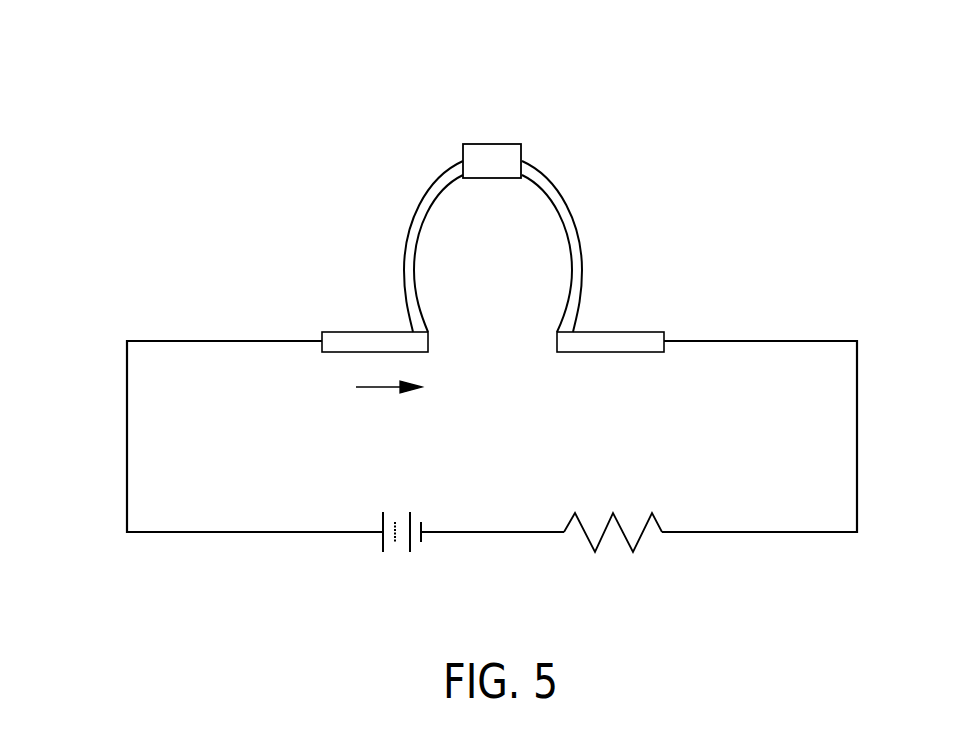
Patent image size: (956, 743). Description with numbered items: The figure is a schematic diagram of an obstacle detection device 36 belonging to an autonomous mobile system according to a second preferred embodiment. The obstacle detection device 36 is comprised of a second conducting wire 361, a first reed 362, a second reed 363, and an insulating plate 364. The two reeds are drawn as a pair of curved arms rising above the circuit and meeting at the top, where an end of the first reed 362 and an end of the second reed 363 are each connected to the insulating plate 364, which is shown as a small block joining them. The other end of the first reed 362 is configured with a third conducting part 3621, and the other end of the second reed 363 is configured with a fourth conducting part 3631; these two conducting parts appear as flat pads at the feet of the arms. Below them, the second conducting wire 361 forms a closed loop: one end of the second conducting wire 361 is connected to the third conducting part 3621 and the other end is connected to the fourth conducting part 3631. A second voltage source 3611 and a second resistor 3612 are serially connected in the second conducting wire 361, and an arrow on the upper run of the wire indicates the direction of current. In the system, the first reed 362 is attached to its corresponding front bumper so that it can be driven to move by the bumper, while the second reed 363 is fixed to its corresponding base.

The obstacle detection device 36 is at (140, 222).
The second conducting wire 361 is at (127, 418).
The second voltage source 3611 is at (381, 548).
The second resistor 3612 is at (643, 533).
The first reed 362 is at (422, 202).
The third conducting part 3621 is at (345, 332).
The second reed 363 is at (571, 211).
The fourth conducting part 3631 is at (638, 331).
The insulating plate 364 is at (497, 143).